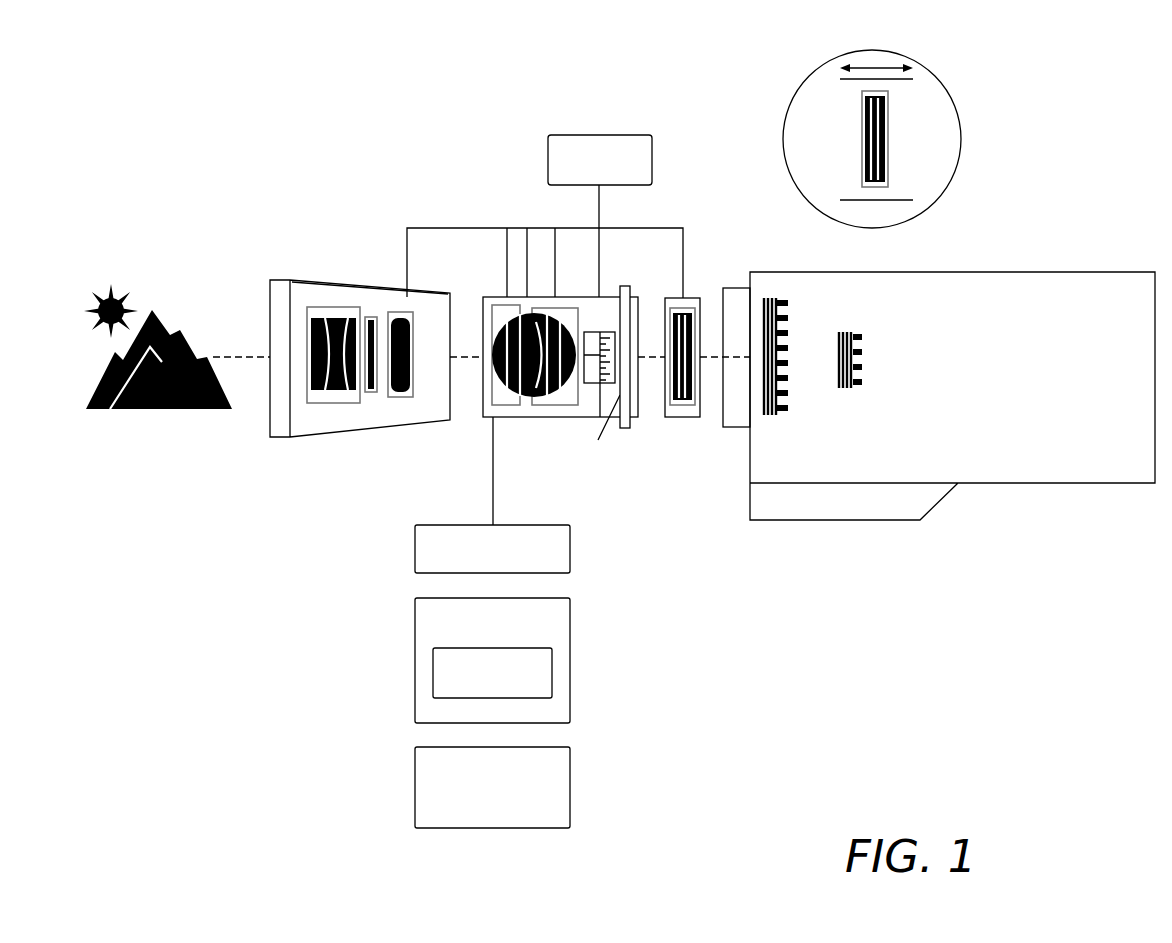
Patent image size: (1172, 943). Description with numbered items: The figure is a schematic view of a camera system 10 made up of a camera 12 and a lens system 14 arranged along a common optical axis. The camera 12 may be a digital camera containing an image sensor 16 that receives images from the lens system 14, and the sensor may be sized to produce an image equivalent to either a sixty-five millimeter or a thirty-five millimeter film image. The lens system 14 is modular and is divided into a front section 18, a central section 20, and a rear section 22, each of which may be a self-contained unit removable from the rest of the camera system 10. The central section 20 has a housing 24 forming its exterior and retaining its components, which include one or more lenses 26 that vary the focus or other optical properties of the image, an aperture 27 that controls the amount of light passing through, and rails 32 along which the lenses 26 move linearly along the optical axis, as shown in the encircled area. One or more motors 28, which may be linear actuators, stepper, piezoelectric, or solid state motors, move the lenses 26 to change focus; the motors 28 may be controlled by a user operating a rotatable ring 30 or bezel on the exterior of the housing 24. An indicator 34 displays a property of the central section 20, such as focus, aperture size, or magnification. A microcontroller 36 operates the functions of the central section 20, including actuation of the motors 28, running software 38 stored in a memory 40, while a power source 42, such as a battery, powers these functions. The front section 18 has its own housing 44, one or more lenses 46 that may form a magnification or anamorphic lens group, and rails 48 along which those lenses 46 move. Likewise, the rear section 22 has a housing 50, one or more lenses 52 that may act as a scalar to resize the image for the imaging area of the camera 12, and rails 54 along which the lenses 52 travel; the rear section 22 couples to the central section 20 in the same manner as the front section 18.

The camera system 10 is at (670, 114).
The camera 12 is at (957, 483).
The lens system 14 is at (432, 197).
The image sensor 16 is at (771, 297).
The front section 18 is at (370, 430).
The central section 20 is at (562, 418).
The rear section 22 is at (683, 420).
The housing 24 is at (503, 417).
The lenses 26 is at (564, 296).
The aperture 27 is at (479, 414).
The motors 28 is at (548, 160).
The rotatable ring 30 is at (625, 428).
The rails 32 is at (500, 296).
The indicator 34 is at (592, 384).
The microcontroller 36 is at (570, 549).
The software 38 is at (570, 625).
The memory 40 is at (552, 672).
The power source 42 is at (570, 773).
The housing 44 is at (370, 288).
The lenses 46 is at (333, 307).
The rails 48 is at (330, 403).
The housing 50 is at (690, 300).
The lenses 52 is at (697, 402).
The rails 54 is at (677, 300).